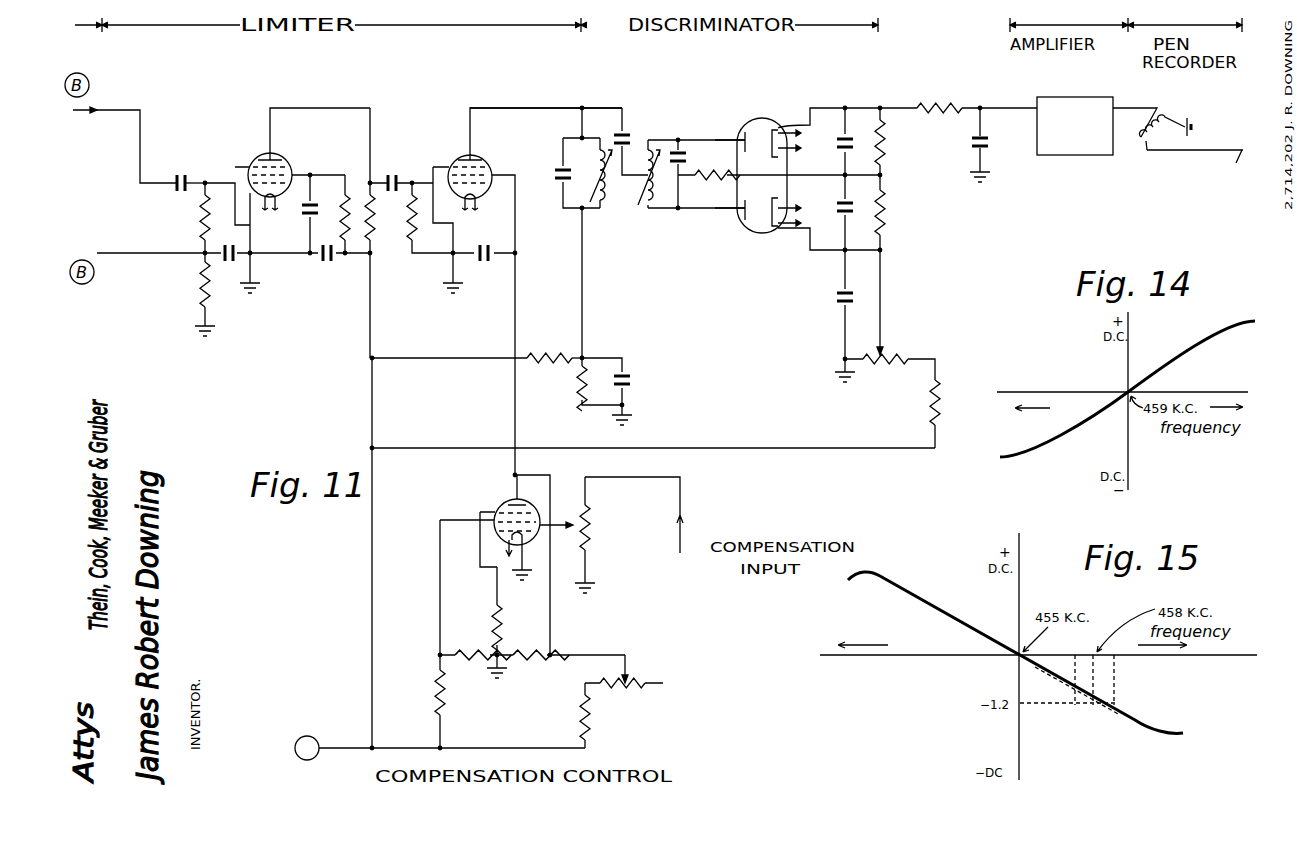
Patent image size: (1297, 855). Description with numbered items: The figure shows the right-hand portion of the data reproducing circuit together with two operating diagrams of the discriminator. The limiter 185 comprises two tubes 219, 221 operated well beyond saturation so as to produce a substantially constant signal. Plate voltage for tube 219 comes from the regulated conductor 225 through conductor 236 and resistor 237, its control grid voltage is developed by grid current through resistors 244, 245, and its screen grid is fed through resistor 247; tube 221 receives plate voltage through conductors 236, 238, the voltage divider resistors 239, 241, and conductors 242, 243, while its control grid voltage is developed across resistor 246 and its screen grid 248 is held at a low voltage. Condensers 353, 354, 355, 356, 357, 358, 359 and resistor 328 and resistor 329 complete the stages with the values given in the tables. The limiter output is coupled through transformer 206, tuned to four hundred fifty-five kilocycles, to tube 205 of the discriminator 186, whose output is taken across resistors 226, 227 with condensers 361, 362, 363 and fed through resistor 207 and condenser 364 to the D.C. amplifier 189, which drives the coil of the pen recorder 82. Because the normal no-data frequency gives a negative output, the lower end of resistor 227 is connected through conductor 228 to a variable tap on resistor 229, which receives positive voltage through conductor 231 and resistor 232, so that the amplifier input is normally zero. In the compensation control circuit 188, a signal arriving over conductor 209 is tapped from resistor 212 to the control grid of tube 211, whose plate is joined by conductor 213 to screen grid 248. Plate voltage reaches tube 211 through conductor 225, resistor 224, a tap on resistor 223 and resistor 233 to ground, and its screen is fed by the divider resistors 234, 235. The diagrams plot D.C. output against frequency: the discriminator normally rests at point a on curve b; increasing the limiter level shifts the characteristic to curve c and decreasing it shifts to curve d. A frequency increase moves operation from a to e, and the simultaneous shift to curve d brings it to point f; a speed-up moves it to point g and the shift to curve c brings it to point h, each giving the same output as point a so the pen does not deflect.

In FIG. 11, the limiter 185 is at (301, 59).
In FIG. 11, the discriminator 186 is at (723, 60).
In FIG. 11, the compensation control circuit 188 is at (518, 741).
In FIG. 11, the D.C. amplifier 189 is at (1088, 156).
In FIG. 11, the pen recorder 82 is at (1158, 158).
In FIG. 11, the discriminator tube 205 is at (764, 118).
In FIG. 11, the transformer 206 is at (646, 207).
In FIG. 11, the resistor 207 is at (951, 106).
In FIG. 11, the conductor 209 is at (684, 498).
In FIG. 11, the compensation control tube 211 is at (504, 504).
In FIG. 11, the resistor 212 is at (590, 528).
In FIG. 11, the conductor 213 is at (513, 397).
In FIG. 11, the first limiter tube 219 is at (258, 155).
In FIG. 11, the second limiter tube 221 is at (470, 160).
In FIG. 11, the variable resistor 223 is at (627, 690).
In FIG. 11, the resistor 224 is at (596, 724).
In FIG. 11, the conductor 225 is at (358, 746).
In FIG. 11, the resistor 226 is at (883, 146).
In FIG. 11, the resistor 227 is at (884, 208).
In FIG. 11, the conductor 228 is at (883, 288).
In FIG. 11, the variable tap resistor 229 is at (896, 354).
In FIG. 11, the conductor 231 is at (730, 448).
In FIG. 11, the resistor 232 is at (938, 398).
In FIG. 11, the resistor 233 is at (539, 660).
In FIG. 11, the voltage divider resistor 234 is at (470, 652).
In FIG. 11, the voltage divider resistor 235 is at (438, 685).
In FIG. 11, the conductor 236 is at (370, 580).
In FIG. 11, the resistor 237 is at (371, 225).
In FIG. 11, the conductor 238 is at (452, 358).
In FIG. 11, the voltage divider resistor 239 is at (547, 355).
In FIG. 11, the voltage divider resistor 241 is at (578, 387).
In FIG. 11, the conductor 242 is at (584, 285).
In FIG. 11, the conductor 243 is at (536, 108).
In FIG. 11, the grid resistor 244 is at (203, 295).
In FIG. 11, the grid resistor 245 is at (203, 220).
In FIG. 11, the grid resistor 246 is at (414, 238).
In FIG. 11, the screen resistor 247 is at (350, 195).
In FIG. 11, the screen grid 248 is at (482, 168).
In FIG. 11, the resistor 328 is at (500, 624).
In FIG. 11, the resistor 329 is at (705, 168).
In FIG. 11, the condenser 353 is at (179, 176).
In FIG. 11, the condenser 354 is at (228, 262).
In FIG. 11, the condenser 355 is at (308, 213).
In FIG. 11, the condenser 356 is at (323, 264).
In FIG. 11, the condenser 357 is at (392, 174).
In FIG. 11, the condenser 358 is at (484, 263).
In FIG. 11, the condenser 359 is at (630, 380).
In FIG. 11, the condenser 361 is at (838, 144).
In FIG. 11, the condenser 362 is at (836, 207).
In FIG. 11, the condenser 363 is at (838, 298).
In FIG. 11, the condenser 364 is at (983, 145).
In FIG. 15, the normal operating point a is at (1087, 727).
In FIG. 15, the normal characteristic curve b is at (1130, 722).
In FIG. 15, the shifted characteristic curve c is at (1108, 730).
In FIG. 15, the shifted characteristic curve d is at (1124, 705).
In FIG. 15, the operating point e is at (1124, 715).
In FIG. 15, the compensated operating point f is at (1124, 698).
In FIG. 15, the operating point g is at (1067, 693).
In FIG. 15, the compensated operating point h is at (1077, 703).